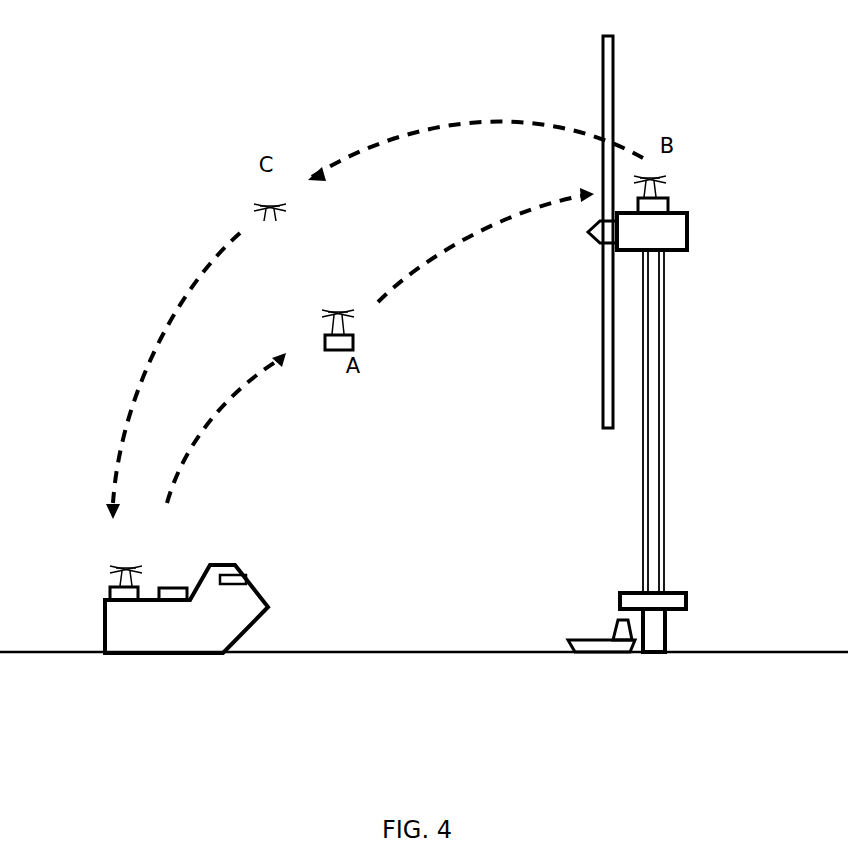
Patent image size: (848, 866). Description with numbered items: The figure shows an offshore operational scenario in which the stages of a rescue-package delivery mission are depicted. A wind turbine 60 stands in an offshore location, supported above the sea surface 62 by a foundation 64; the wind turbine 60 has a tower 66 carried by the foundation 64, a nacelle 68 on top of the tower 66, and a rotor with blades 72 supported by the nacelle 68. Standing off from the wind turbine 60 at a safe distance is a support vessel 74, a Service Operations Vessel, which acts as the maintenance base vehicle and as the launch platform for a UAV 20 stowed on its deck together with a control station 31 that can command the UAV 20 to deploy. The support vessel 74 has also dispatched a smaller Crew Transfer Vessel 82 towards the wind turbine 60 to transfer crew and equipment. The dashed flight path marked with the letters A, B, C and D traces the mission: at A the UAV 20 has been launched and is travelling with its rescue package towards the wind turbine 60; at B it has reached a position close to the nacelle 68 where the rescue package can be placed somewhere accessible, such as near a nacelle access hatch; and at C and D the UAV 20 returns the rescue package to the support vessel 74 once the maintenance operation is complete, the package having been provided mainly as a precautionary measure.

The UAV 20 is at (98, 568).
The control station 31 is at (178, 583).
The wind turbine 60 is at (640, 344).
The sea surface 62 is at (418, 651).
The foundation 64 is at (668, 628).
The tower 66 is at (663, 385).
The nacelle 68 is at (690, 240).
The blades 72 is at (605, 113).
The support vessel 74 is at (191, 570).
The Crew Transfer Vessel 82 is at (583, 616).